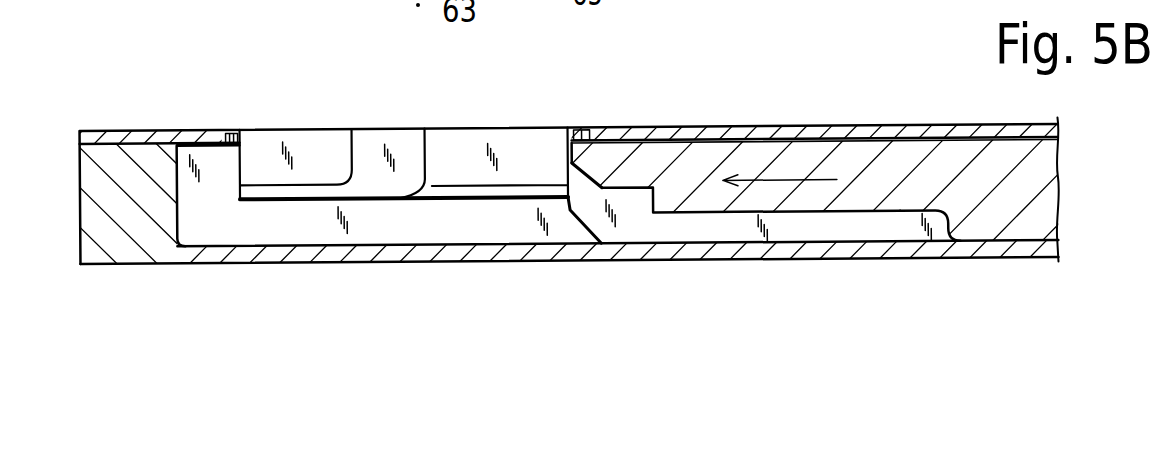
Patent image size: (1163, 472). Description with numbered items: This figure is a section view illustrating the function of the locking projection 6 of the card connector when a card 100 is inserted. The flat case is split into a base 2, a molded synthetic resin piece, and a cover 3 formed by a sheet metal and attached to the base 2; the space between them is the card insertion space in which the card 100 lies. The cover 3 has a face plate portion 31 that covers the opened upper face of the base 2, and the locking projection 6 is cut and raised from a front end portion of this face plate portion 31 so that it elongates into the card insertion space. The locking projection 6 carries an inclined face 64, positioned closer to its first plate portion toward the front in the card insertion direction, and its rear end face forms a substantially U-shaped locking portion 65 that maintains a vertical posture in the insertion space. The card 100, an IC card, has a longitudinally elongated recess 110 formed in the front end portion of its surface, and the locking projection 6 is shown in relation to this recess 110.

The base 2 is at (747, 262).
The cover 3 is at (733, 122).
The face plate portion 31 is at (851, 125).
The locking projection 6 is at (488, 203).
The inclined face 64 is at (378, 142).
The locking portion 65 is at (578, 180).
The card 100 is at (1050, 198).
The recess 110 is at (898, 213).